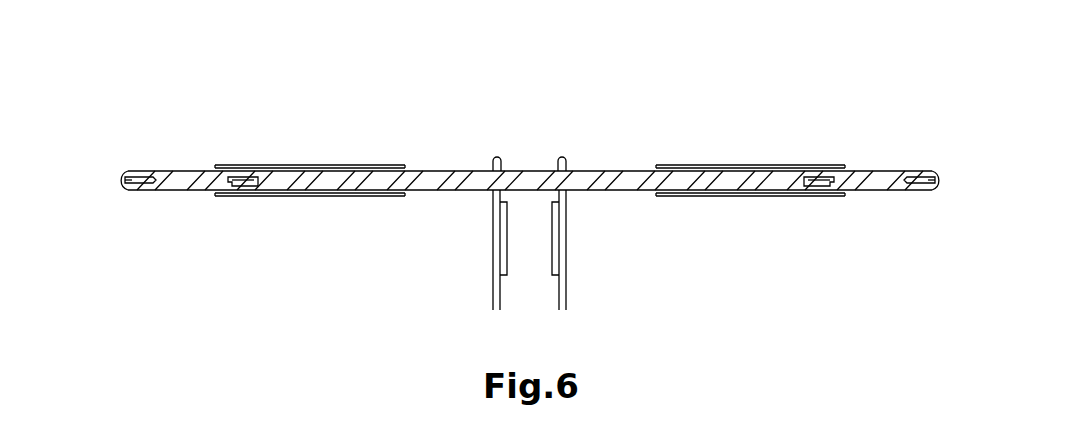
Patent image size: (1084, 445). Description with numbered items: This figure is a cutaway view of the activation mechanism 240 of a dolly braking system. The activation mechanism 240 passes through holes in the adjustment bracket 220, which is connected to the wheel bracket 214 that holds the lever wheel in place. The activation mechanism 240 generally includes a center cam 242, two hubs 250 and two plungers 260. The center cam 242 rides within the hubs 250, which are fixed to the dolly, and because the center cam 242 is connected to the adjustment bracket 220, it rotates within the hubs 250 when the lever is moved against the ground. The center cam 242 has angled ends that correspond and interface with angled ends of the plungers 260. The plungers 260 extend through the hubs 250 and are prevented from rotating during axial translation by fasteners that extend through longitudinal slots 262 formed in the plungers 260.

The activation mechanism 240 is at (713, 117).
The center cam 242 is at (462, 171).
The adjustment bracket 220 is at (498, 159).
The wheel bracket 214 is at (553, 221).
The hubs 250 is at (375, 178).
The plungers 260 is at (137, 195).
The longitudinal slots 262 is at (225, 180).